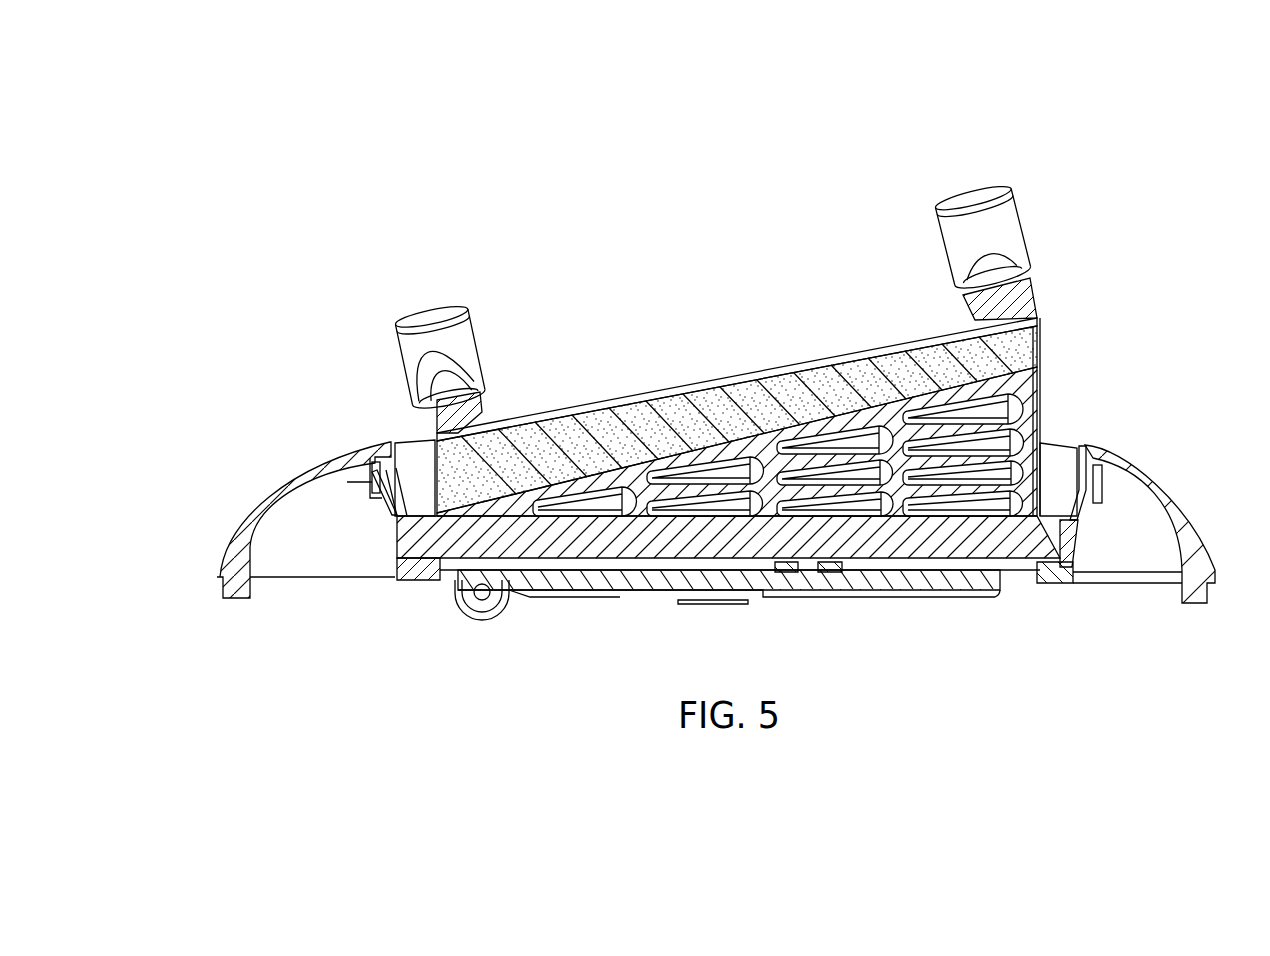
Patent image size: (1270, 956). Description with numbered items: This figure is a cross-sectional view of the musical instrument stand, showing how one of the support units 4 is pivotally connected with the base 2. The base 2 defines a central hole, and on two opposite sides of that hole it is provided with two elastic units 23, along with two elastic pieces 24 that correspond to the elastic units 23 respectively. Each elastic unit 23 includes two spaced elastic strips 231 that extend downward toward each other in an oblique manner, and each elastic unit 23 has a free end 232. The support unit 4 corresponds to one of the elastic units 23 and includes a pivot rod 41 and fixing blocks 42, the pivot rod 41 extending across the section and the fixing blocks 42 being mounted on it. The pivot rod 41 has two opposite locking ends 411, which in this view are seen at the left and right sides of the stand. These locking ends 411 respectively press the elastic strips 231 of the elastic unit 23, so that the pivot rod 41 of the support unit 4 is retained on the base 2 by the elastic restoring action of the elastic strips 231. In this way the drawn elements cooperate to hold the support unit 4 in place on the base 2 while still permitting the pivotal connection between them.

The base 2 is at (282, 478).
The support unit 4 is at (751, 390).
The pivot rod 41 is at (612, 553).
The fixing block 42 is at (972, 205).
The locking end 411 is at (402, 488).
The elastic unit 23 is at (378, 480).
The elastic strip 231 is at (1093, 510).
The free end 232 is at (380, 478).
The elastic piece 24 is at (788, 572).